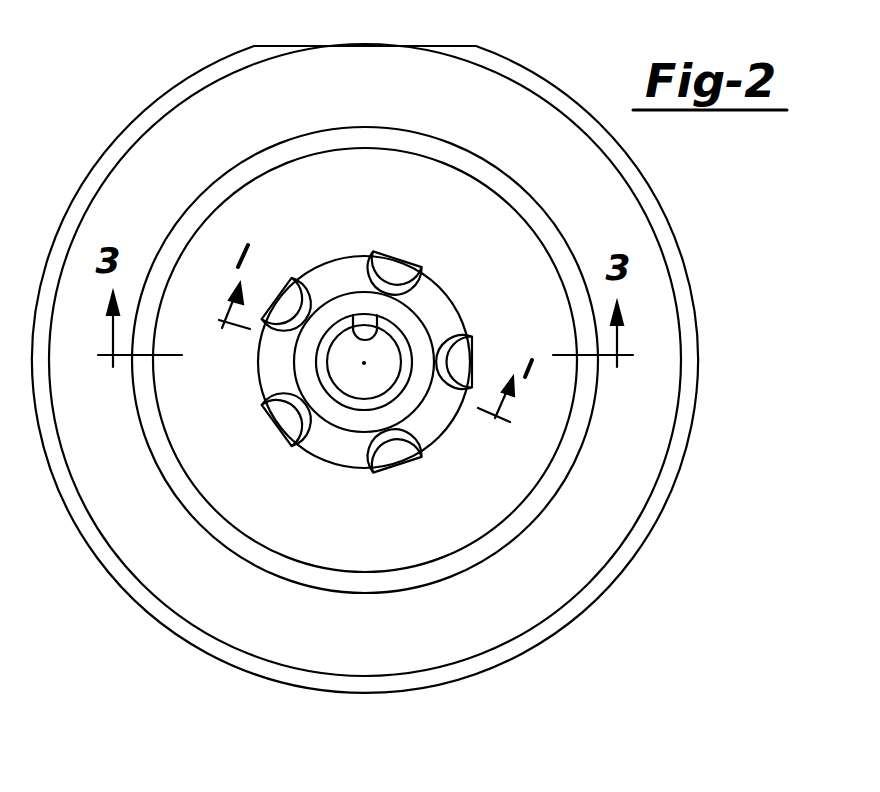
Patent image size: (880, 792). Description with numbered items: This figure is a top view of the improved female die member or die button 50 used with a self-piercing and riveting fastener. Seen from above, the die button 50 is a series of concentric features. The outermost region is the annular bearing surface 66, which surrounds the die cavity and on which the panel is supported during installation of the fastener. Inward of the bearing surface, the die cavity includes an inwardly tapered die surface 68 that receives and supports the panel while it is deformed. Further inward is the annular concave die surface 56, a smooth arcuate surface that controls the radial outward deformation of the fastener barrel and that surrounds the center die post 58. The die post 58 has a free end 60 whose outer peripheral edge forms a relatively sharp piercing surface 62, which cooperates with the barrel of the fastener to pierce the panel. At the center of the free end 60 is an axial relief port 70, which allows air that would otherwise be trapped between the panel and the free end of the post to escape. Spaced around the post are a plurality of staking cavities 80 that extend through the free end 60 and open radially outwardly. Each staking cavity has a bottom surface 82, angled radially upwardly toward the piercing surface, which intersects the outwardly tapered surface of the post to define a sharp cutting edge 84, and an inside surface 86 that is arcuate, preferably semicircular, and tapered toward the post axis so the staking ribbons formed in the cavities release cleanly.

The female die member 50 is at (136, 181).
The annular concave die surface 56 is at (386, 530).
The center die post 58 is at (438, 432).
The free end 60 is at (302, 358).
The piercing surface 62 is at (450, 298).
The annular bearing surface 66 is at (370, 106).
The inwardly tapered die surface 68 is at (148, 423).
The axial relief port 70 is at (355, 320).
The staking cavities 80 is at (393, 262).
The bottom surface 82 is at (286, 423).
The cutting edge 84 is at (480, 360).
The inside surface 86 is at (378, 461).